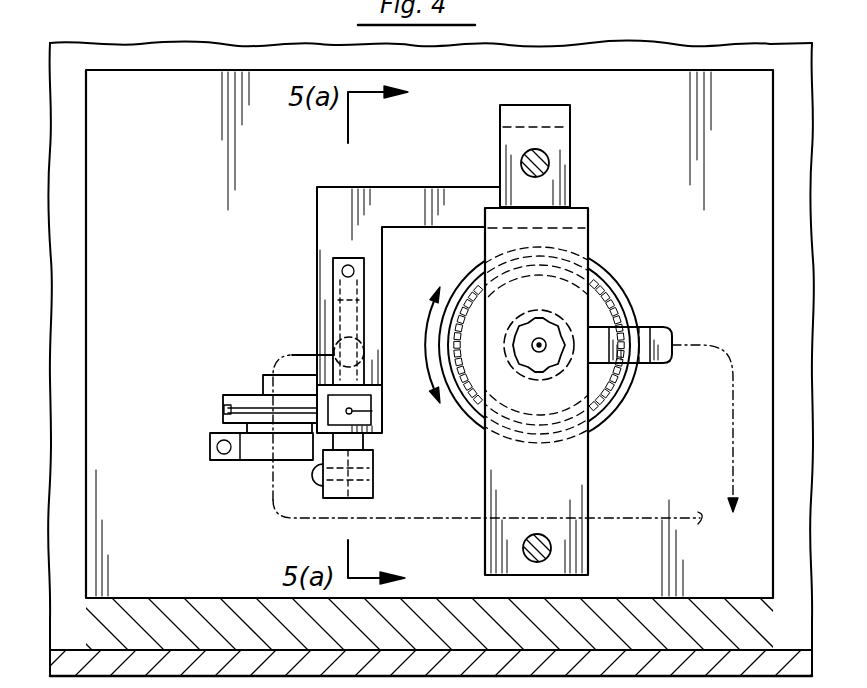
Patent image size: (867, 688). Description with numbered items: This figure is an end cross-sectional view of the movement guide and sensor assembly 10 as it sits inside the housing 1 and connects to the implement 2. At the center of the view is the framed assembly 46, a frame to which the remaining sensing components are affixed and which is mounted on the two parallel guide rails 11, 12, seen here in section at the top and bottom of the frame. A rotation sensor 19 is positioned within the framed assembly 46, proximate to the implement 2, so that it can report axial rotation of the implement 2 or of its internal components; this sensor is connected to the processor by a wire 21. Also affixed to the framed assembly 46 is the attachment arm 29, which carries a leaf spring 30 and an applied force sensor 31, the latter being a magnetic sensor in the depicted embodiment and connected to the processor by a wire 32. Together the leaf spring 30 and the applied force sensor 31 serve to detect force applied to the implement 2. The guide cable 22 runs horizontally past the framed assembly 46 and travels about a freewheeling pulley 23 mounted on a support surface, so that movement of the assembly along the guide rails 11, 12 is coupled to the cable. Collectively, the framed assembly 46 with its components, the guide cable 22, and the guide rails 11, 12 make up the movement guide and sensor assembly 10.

The housing 1 is at (40, 140).
The implement 2 is at (541, 343).
The movement guide and sensor assembly 10 is at (580, 124).
The guide rail 11 is at (549, 163).
The guide rail 12 is at (552, 550).
The rotation sensor 19 is at (633, 302).
The wire 21 is at (733, 421).
The guide cable 22 is at (372, 412).
The freewheeling pulley 23 is at (235, 397).
The attachment arm 29 is at (342, 240).
The leaf spring 30 is at (347, 310).
The applied force sensor 31 is at (383, 330).
The wire 32 is at (272, 498).
The framed assembly 46 is at (590, 240).